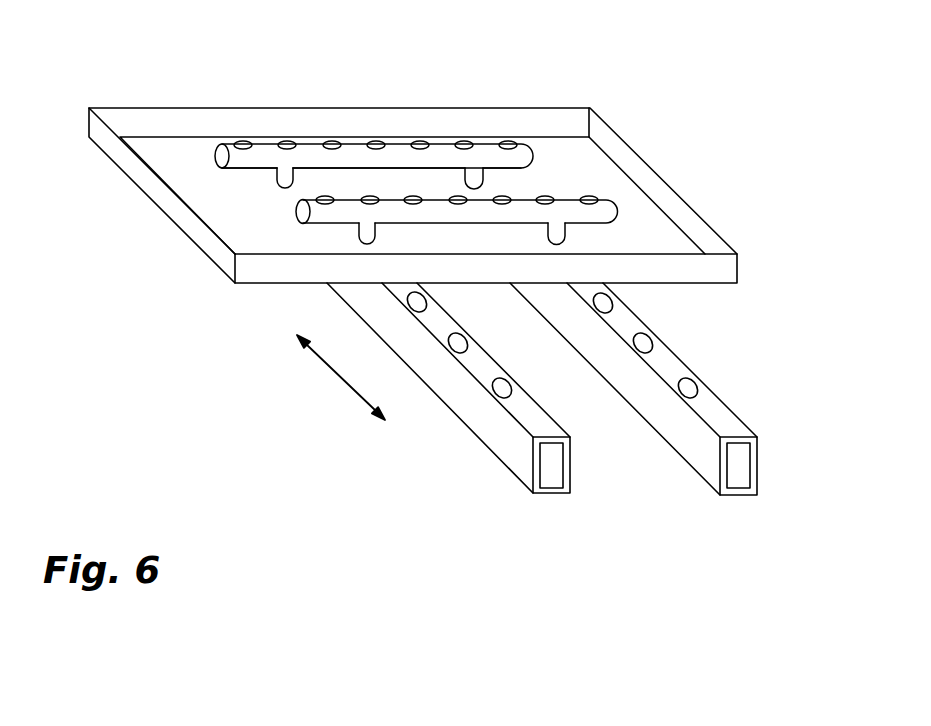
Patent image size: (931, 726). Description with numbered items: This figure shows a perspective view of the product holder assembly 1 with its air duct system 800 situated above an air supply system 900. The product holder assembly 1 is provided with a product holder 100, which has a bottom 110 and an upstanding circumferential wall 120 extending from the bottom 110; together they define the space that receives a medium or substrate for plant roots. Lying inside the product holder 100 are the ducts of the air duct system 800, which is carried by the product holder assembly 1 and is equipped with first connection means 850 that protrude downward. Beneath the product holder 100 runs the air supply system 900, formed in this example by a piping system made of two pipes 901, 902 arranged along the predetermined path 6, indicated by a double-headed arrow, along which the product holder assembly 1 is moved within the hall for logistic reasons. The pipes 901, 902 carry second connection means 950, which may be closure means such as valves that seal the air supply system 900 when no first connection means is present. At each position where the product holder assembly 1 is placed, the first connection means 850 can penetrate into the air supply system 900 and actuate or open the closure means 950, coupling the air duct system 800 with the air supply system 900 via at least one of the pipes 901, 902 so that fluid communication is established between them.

The product holder assembly 1 is at (413, 184).
The product holder 100 is at (631, 68).
The bottom 110 is at (228, 217).
The upstanding circumferential wall 120 is at (165, 195).
The air duct system 800 is at (388, 158).
The first connection means 850 is at (277, 180).
The air supply system 900 is at (698, 535).
The pipe 901 is at (733, 457).
The pipe 902 is at (543, 460).
The second connection means 950 is at (687, 388).
The predetermined path 6 is at (338, 380).